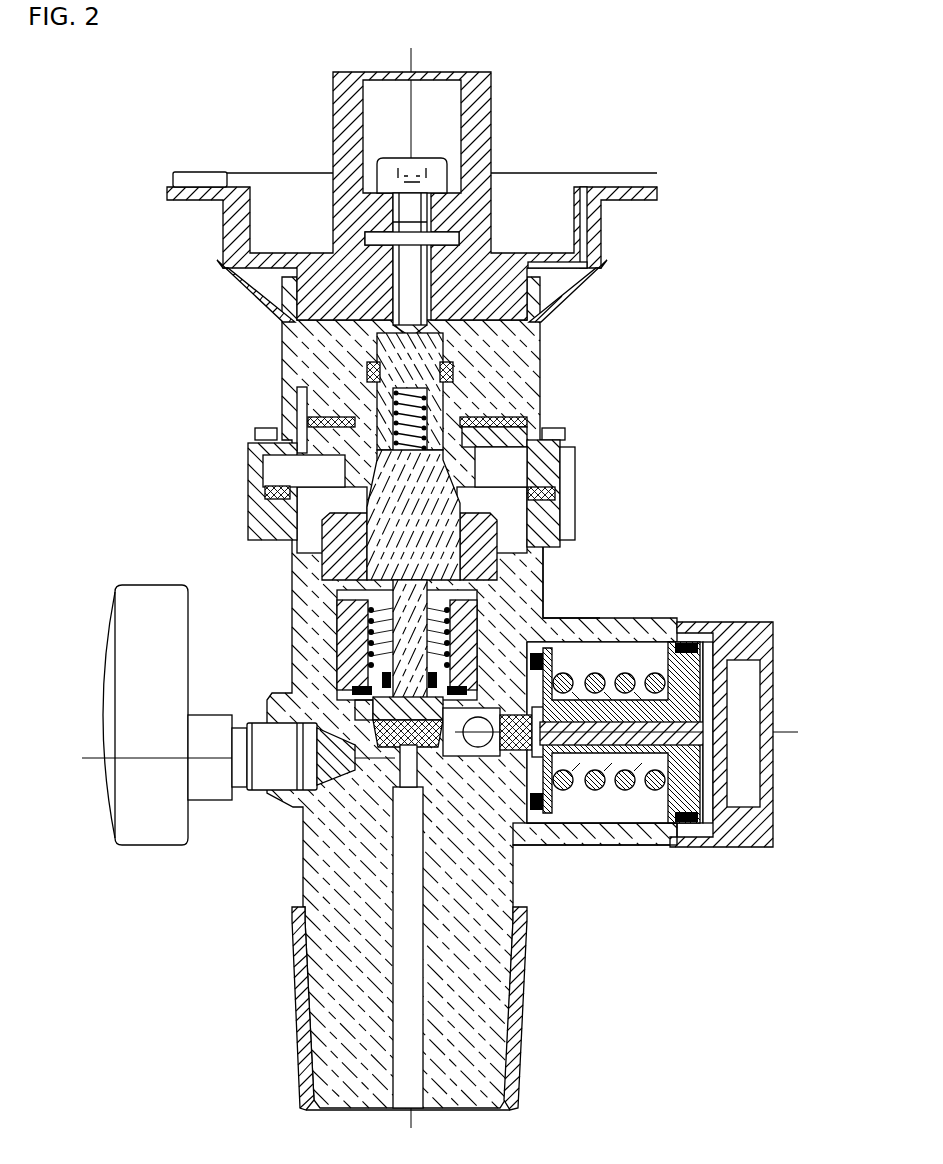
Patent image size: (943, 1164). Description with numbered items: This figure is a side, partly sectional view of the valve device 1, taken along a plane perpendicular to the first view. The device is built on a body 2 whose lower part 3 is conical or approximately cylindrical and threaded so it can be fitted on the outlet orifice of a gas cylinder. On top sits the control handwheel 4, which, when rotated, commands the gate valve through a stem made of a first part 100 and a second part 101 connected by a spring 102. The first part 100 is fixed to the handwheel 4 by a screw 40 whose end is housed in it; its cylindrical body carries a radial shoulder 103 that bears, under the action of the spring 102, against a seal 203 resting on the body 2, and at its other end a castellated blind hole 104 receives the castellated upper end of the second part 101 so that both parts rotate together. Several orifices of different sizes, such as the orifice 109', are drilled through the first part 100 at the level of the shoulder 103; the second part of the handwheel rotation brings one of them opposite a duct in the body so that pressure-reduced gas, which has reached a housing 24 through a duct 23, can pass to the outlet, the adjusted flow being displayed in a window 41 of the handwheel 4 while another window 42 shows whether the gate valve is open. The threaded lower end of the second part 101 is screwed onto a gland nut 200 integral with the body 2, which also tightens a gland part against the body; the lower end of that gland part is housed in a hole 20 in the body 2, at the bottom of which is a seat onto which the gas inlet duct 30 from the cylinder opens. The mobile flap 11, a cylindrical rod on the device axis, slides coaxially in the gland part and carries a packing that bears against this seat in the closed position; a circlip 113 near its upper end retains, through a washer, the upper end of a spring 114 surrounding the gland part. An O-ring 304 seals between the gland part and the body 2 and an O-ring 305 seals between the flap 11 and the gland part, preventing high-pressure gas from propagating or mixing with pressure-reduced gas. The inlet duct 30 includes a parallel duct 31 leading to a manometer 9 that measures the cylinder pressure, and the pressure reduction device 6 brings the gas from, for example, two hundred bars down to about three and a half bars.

The valve device 1 is at (268, 86).
The body 2 is at (495, 910).
The lower part 3 is at (525, 1057).
The control handwheel 4 is at (493, 120).
The screw 40 is at (425, 160).
The window 41 is at (555, 257).
The window 42 is at (202, 178).
The seal 203 is at (492, 428).
The radial shoulder 103 is at (495, 420).
The spring 102 is at (365, 416).
The orifice 109' is at (225, 420).
The first part 100 is at (512, 470).
The housing 24 is at (553, 473).
The blind hole 104 is at (302, 463).
The circlip 113 is at (340, 577).
The second part 101 is at (443, 536).
The gland nut 200 is at (335, 592).
The O-ring 305 is at (340, 677).
The O-ring 304 is at (360, 697).
The mobile flap 11 is at (372, 710).
The gas inlet duct 30 is at (403, 753).
The parallel duct 31 is at (380, 770).
The manometer 9 is at (128, 677).
The pressure reduction device 6 is at (793, 765).
The duct 23 is at (510, 622).
The hole 20 is at (567, 830).
The spring 114 is at (497, 617).